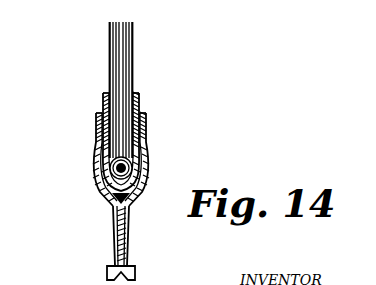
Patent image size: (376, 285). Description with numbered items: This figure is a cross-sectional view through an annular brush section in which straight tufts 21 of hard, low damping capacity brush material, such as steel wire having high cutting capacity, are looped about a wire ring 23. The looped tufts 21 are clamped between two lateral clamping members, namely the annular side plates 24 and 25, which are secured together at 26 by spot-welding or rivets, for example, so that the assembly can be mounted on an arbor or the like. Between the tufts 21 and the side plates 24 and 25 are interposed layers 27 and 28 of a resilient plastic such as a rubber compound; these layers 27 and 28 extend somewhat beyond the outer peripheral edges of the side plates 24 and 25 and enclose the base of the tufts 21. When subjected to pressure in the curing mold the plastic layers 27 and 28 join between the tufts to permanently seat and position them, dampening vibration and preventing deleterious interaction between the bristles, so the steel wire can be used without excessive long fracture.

The straight tufts 21 is at (134, 53).
The resilient plastic layer 27 is at (101, 100).
The resilient plastic layer 28 is at (139, 101).
The annular side plate 24 is at (97, 150).
The annular side plate 25 is at (145, 155).
The wire ring 23 is at (100, 186).
The securing location 26 is at (112, 250).